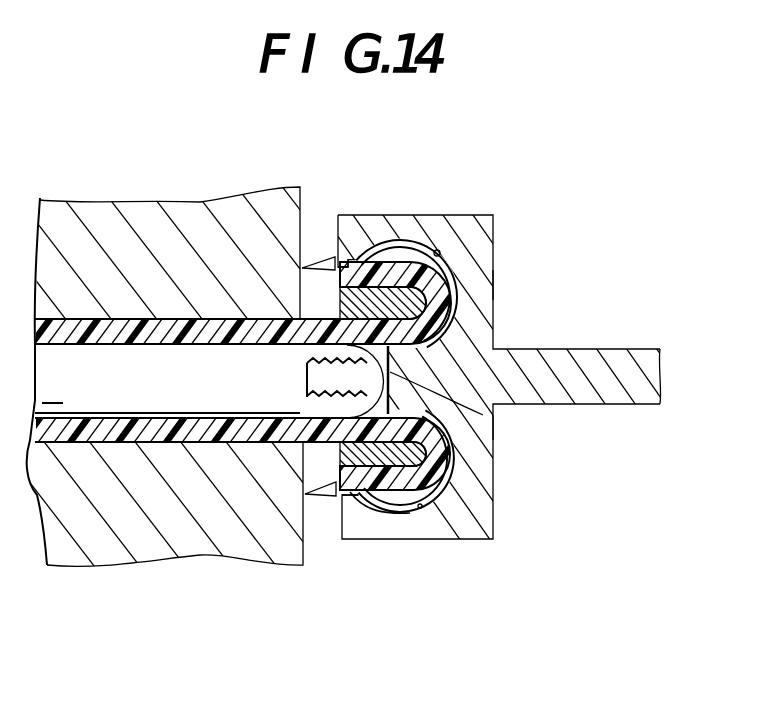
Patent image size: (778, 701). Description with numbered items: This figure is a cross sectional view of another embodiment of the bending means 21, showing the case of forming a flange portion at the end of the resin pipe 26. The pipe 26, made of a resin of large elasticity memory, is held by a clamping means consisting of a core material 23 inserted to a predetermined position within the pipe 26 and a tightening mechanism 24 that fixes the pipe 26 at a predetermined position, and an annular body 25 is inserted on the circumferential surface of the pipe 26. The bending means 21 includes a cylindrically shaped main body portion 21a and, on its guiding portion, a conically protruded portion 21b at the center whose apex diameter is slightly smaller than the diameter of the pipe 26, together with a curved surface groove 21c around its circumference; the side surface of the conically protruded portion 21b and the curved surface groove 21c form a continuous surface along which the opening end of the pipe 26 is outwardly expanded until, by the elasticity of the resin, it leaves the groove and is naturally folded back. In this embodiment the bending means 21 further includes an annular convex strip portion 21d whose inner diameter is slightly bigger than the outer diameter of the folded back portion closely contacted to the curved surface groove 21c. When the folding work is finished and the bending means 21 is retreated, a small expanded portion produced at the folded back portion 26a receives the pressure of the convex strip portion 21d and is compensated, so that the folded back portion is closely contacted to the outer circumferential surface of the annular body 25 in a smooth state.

The bending means 21 is at (586, 212).
The main body portion 21a is at (493, 282).
The conically protruded portion 21b is at (493, 428).
The curved surface groove 21c is at (438, 251).
The annular convex strip portion 21d is at (348, 262).
The core material 23 is at (178, 382).
The tightening mechanism 24 is at (307, 548).
The annular body 25 is at (310, 268).
The resin pipe 26 is at (132, 437).
The rolled end portion of tube 26a is at (404, 246).